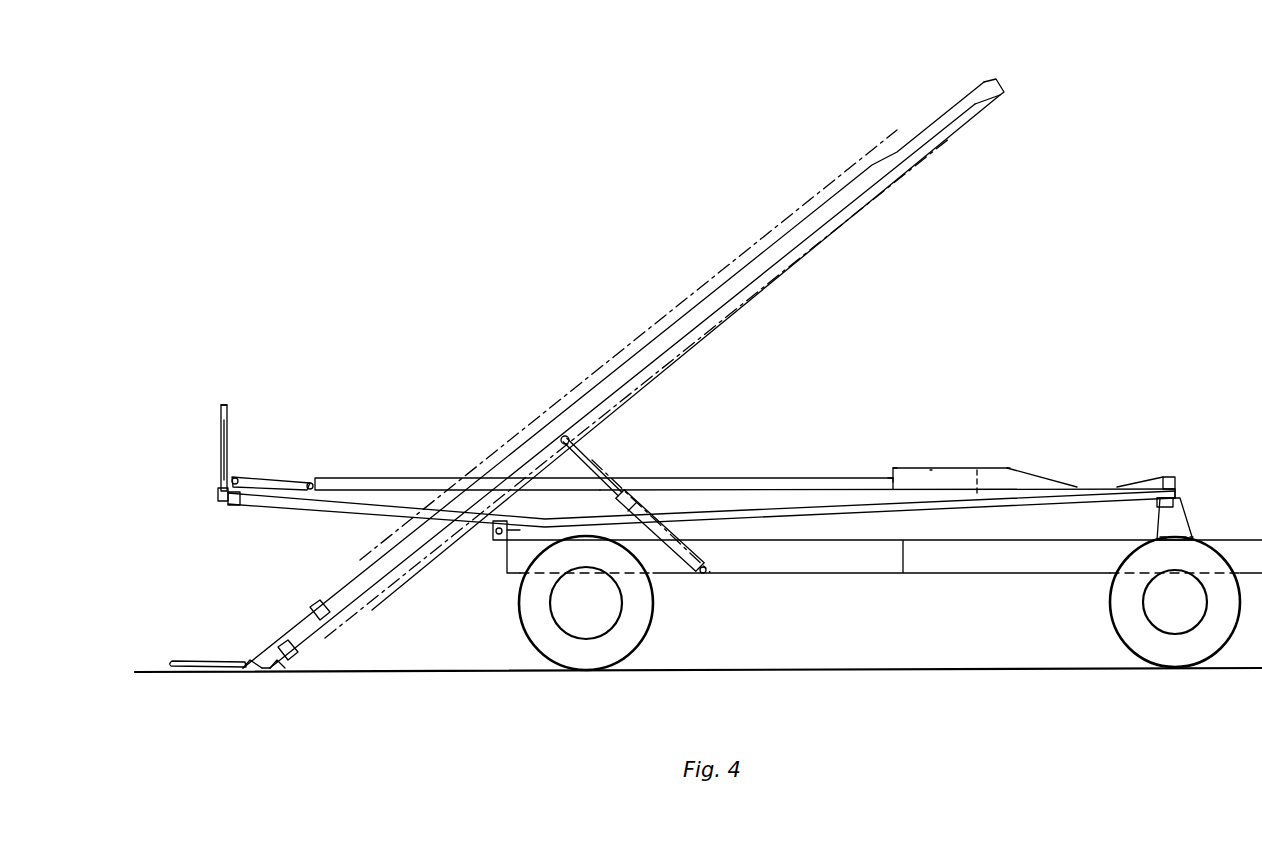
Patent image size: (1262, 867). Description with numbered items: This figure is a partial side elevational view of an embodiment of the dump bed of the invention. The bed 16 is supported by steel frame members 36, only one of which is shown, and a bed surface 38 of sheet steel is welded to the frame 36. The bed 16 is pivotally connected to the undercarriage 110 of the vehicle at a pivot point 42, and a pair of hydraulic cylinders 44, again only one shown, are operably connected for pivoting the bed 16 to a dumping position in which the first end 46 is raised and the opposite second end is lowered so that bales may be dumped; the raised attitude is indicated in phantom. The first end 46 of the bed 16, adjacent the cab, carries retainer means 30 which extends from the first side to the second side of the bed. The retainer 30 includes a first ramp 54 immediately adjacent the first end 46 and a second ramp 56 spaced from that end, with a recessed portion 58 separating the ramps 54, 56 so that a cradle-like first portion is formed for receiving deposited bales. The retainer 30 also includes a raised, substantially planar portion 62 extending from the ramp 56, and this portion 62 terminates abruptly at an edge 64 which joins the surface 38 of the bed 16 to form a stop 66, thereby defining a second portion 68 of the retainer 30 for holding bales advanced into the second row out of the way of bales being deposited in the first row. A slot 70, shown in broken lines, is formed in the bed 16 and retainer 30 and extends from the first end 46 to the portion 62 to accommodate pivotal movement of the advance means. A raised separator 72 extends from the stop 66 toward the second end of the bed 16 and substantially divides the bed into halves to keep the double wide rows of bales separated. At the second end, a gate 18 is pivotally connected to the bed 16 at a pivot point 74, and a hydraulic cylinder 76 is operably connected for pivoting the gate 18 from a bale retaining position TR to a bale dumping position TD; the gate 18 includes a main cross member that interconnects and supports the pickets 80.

The bed 16 is at (910, 512).
The gate 18 is at (228, 418).
The retainer means 30 is at (1009, 467).
The frame member 36 is at (788, 503).
The bed surface 38 is at (731, 489).
The pivot point 42 is at (494, 538).
The hydraulic cylinder 44 is at (648, 495).
The first end 46 is at (1005, 92).
The first ramp 54 is at (1163, 477).
The second ramp 56 is at (1038, 470).
The recessed portion 58 is at (1110, 483).
The raised planar portion 62 is at (957, 468).
The edge 64 is at (893, 468).
The stop 66 is at (890, 478).
The second portion 68 is at (932, 417).
The slot 70 is at (980, 493).
The raised separator 72 is at (372, 479).
The pivot point 74 is at (219, 498).
The hydraulic cylinder 76 is at (262, 478).
The pickets 80 is at (221, 453).
The undercarriage 110 is at (743, 568).
The bale retaining position TR is at (221, 428).
The bale dumping position TD is at (198, 665).